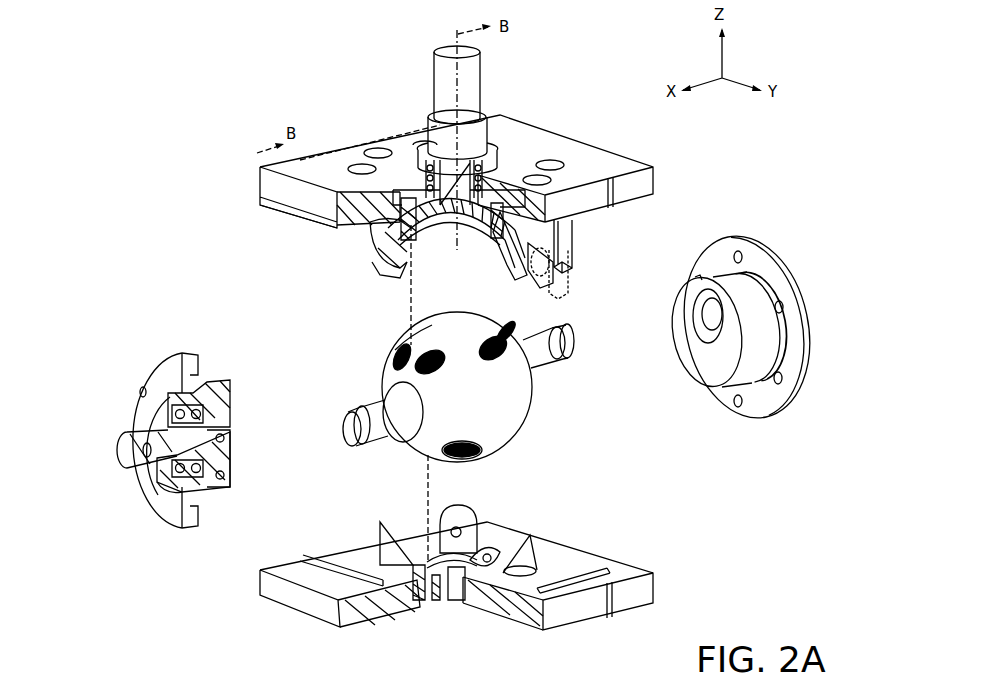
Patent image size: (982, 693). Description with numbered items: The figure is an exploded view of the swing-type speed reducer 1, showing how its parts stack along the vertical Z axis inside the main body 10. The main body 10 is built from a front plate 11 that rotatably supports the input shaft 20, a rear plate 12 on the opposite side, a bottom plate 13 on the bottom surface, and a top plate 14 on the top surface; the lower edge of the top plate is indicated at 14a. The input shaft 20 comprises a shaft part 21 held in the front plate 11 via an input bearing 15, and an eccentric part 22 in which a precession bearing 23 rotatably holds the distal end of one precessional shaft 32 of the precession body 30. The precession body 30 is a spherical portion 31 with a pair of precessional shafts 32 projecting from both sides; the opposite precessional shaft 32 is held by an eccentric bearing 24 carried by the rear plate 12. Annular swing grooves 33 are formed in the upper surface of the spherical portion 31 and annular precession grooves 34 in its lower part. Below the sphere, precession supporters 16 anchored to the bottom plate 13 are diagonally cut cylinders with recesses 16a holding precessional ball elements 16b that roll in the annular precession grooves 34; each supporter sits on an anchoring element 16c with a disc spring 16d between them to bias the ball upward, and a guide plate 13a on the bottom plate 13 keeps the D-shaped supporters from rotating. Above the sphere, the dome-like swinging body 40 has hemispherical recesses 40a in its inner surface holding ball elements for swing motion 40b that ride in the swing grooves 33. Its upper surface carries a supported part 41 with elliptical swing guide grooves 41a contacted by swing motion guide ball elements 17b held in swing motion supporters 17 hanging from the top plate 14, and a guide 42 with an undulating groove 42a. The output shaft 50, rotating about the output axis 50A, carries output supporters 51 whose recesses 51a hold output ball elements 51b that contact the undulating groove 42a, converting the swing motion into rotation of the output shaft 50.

The swing-type speed reducer 1 is at (560, 73).
The main body 10 is at (650, 153).
The front plate 11 is at (165, 345).
The rear plate 12 is at (748, 235).
The bottom plate 13 is at (640, 605).
The guide plate 13a is at (585, 560).
The top plate 14 is at (340, 160).
The lower edge of upper plate 14a is at (285, 222).
The input bearing 15 is at (165, 415).
The precession supporter 16 is at (400, 600).
The recess 16a is at (450, 600).
The precessional ball element 16b is at (425, 470).
The anchoring element 16c is at (440, 610).
The disc spring 16d is at (420, 602).
The swing motion supporter 17 is at (572, 262).
The swing motion guide ball element 17b is at (562, 287).
The input shaft 20 is at (216, 502).
The shaft part 21 is at (150, 470).
The eccentric part 22 is at (222, 380).
The precession bearing 23 is at (700, 310).
The eccentric bearing 24 is at (725, 410).
The precession body 30 is at (347, 350).
The spherical portion 31 is at (532, 417).
The precessional shaft 32 is at (556, 370).
The annular swing groove 33 is at (520, 375).
The annular precession groove 34 is at (490, 448).
The swinging body 40 is at (353, 264).
The recess 40a is at (420, 246).
The ball element for swing motion 40b is at (392, 350).
The supported part 41 is at (375, 250).
The swing guide groove 41a is at (560, 272).
The guide 42 is at (515, 262).
The undulating groove 42a is at (420, 226).
The output shaft 50 is at (432, 71).
The output axis 50A is at (485, 97).
The output supporter 51 is at (392, 230).
The recess 51a is at (380, 256).
The output ball element 51b is at (402, 262).